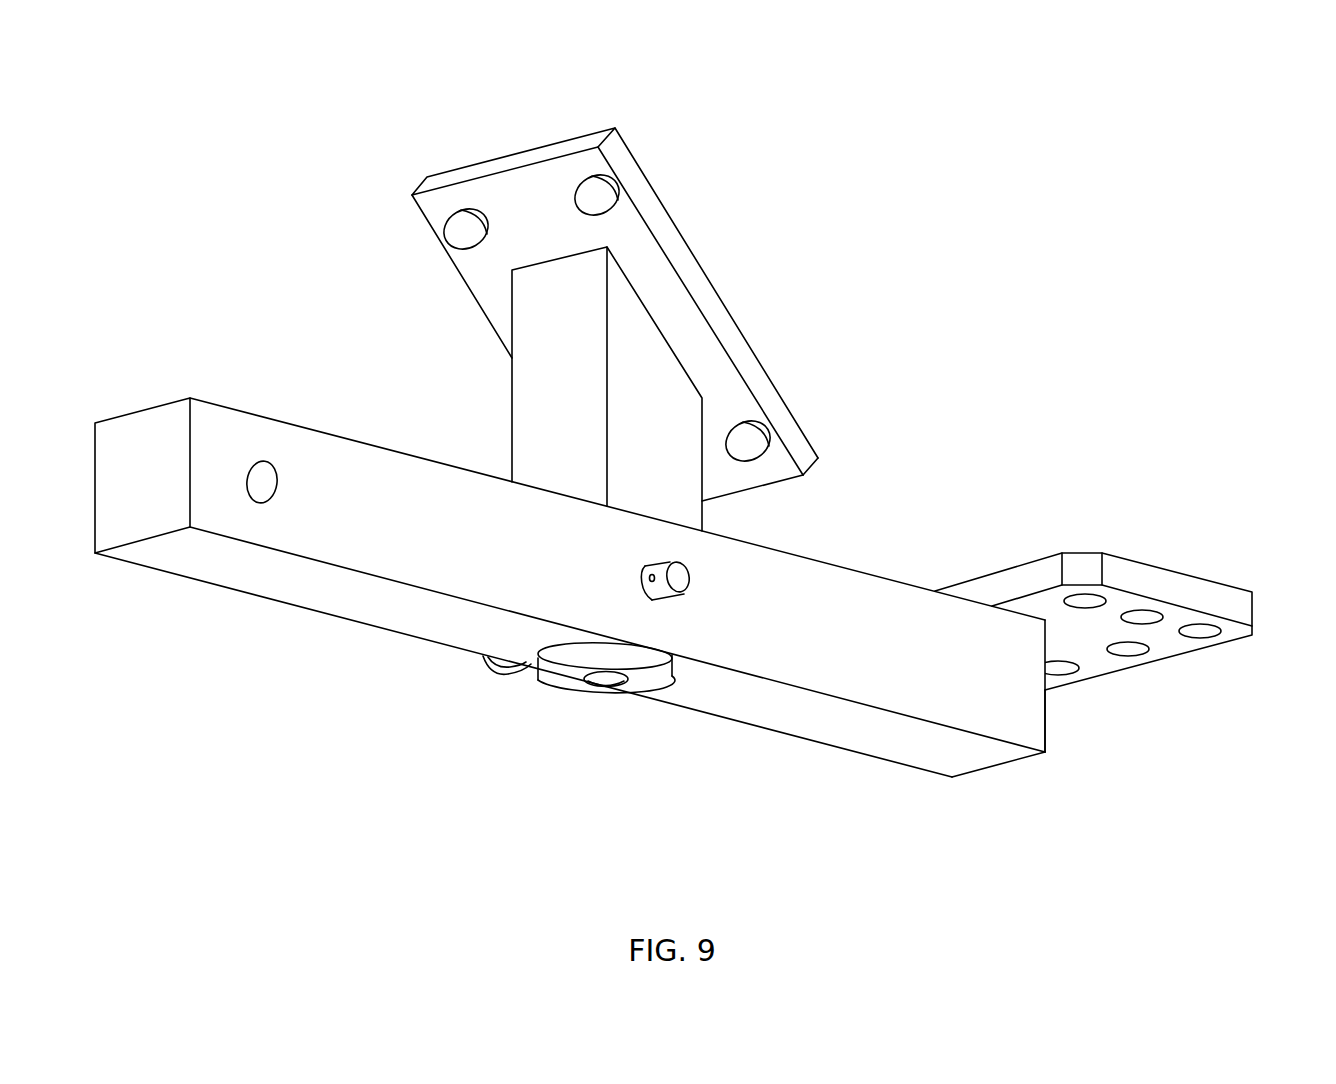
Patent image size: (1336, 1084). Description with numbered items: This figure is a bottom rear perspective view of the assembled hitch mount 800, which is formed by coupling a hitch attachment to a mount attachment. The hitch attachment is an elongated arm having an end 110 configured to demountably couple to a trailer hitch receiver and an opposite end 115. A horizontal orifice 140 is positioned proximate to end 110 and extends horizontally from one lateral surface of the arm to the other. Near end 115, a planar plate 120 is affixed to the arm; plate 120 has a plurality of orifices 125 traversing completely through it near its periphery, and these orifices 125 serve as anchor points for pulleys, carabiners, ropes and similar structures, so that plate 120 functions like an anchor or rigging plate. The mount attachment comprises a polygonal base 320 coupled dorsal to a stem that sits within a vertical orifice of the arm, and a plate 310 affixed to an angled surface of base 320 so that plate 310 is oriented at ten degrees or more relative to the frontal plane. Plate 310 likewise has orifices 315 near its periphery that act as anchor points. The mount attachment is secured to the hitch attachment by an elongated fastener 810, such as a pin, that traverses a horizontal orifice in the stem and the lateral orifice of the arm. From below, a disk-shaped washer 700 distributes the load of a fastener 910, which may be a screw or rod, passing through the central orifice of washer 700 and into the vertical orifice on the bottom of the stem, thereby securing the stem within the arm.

The hitch mount 800 is at (1210, 160).
The end 110 is at (153, 433).
The end 115 is at (1043, 722).
The plate 120 is at (1183, 572).
The orifice 125 is at (1197, 633).
The horizontal orifice 140 is at (265, 477).
The plate 310 is at (601, 123).
The orifice 315 is at (458, 227).
The base 320 is at (510, 386).
The washer 700 is at (550, 674).
The fastener 810 is at (680, 588).
The fastener 910 is at (608, 686).